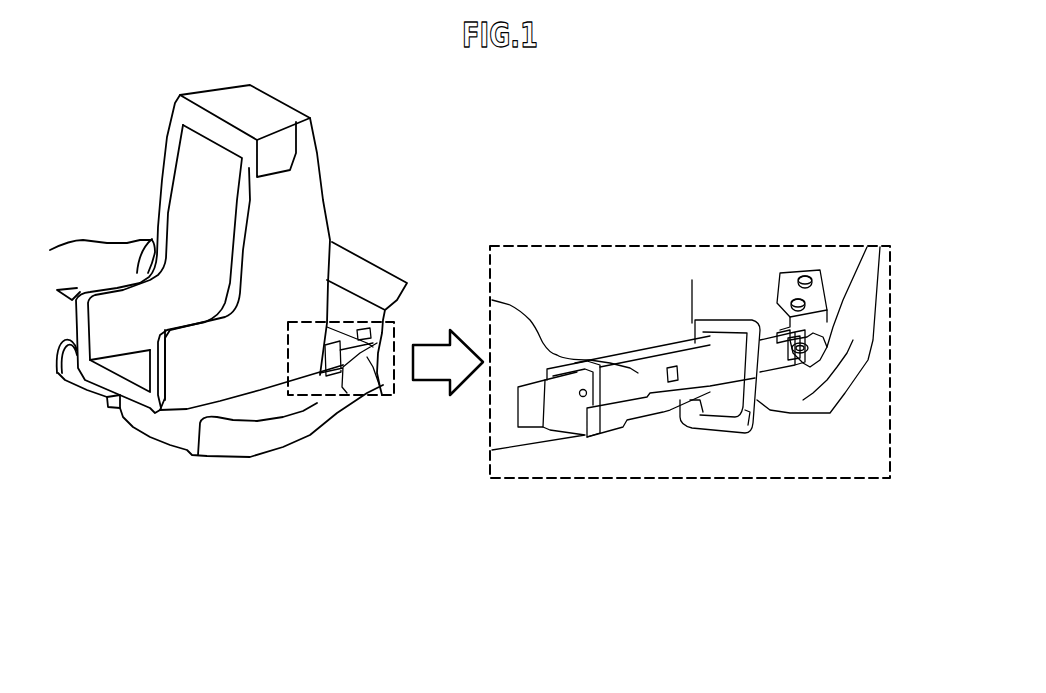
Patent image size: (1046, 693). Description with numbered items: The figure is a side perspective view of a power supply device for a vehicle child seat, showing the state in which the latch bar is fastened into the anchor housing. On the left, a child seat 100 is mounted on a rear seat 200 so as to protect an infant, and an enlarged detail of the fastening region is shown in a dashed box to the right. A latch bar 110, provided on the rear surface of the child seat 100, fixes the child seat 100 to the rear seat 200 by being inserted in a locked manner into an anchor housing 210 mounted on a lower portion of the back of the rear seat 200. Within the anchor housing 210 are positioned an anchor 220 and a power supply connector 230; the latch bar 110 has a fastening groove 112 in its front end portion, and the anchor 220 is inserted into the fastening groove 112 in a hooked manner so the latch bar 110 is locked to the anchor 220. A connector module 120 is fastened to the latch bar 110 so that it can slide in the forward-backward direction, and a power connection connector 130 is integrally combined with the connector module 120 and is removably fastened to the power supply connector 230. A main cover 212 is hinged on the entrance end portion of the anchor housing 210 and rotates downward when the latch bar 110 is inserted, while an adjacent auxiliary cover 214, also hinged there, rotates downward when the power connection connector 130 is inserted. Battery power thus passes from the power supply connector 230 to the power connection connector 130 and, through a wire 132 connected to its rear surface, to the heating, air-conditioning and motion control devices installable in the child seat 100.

The child seat 100 is at (313, 183).
The rear seat 200 is at (285, 438).
The latch bar 110 is at (545, 425).
The fastening groove 112 is at (785, 395).
The connector module 120 is at (608, 436).
The power connection connector 130 is at (677, 393).
The wire 132 is at (585, 437).
The anchor housing 210 is at (727, 433).
The main cover 212 is at (693, 393).
The auxiliary cover 214 is at (740, 427).
The anchor 220 is at (825, 407).
The power supply connector 230 is at (822, 356).